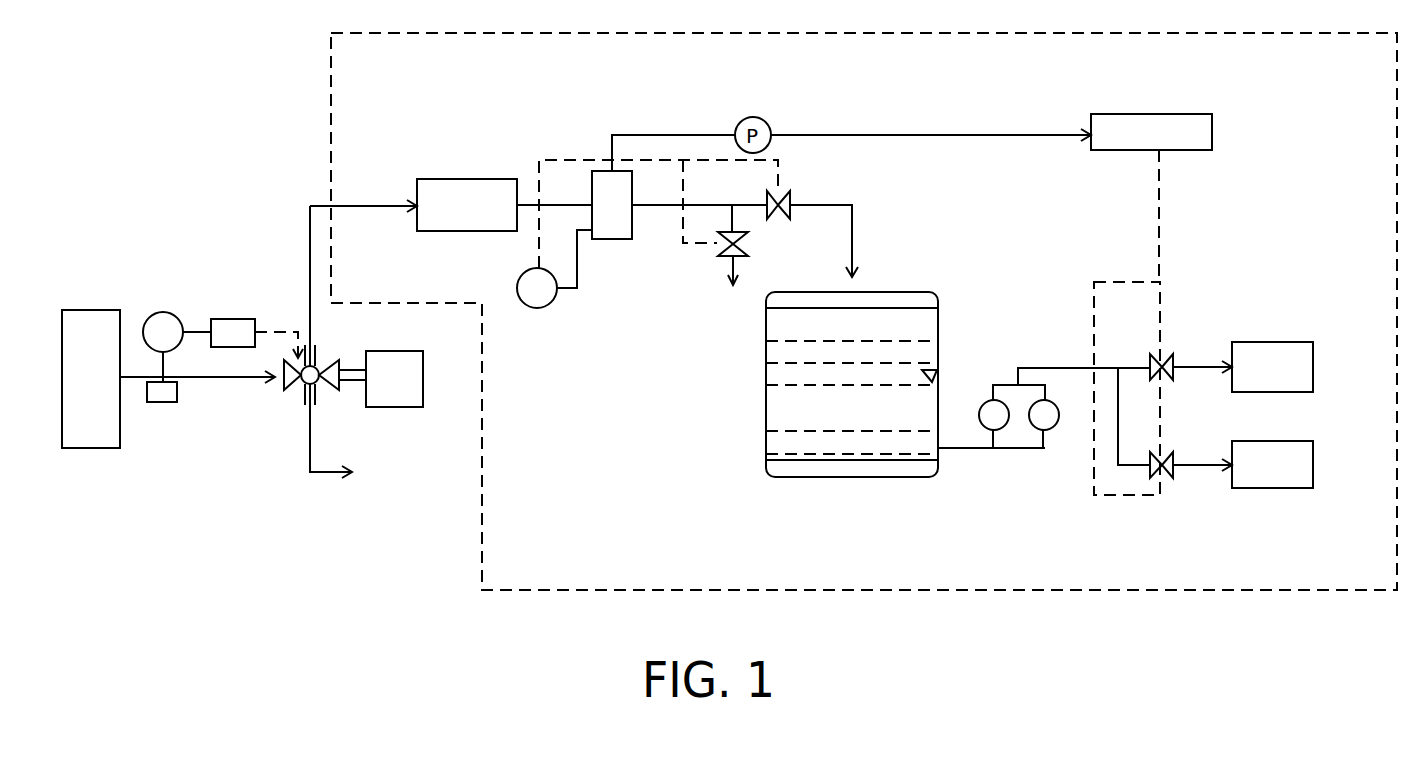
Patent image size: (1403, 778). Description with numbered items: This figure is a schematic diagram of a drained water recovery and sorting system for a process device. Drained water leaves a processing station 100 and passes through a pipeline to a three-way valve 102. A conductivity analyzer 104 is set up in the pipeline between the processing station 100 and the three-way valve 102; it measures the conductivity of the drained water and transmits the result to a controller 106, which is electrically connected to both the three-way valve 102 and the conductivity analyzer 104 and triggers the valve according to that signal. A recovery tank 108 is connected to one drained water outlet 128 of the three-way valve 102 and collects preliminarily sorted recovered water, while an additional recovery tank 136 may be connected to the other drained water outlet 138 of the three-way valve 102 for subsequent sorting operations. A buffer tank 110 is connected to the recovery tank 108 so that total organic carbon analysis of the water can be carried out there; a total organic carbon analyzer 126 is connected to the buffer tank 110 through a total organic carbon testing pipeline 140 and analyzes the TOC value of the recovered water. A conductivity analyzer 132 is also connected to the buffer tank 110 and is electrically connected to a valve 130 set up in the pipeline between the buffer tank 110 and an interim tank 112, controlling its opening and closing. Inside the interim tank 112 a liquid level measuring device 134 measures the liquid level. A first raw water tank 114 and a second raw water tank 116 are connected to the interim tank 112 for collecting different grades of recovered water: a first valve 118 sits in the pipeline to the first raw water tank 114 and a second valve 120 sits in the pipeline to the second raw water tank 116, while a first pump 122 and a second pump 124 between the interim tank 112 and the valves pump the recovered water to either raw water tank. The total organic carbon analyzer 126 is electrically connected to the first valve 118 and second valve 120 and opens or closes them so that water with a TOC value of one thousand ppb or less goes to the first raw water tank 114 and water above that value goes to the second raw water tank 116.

The processing station 100 is at (92, 310).
The three-way valve 102 is at (290, 390).
The conductivity analyzer 104 is at (160, 311).
The controller 106 is at (233, 319).
The recovery tank 108 is at (473, 231).
The buffer tank 110 is at (613, 239).
The interim tank 112 is at (853, 477).
The first raw water tank 114 is at (1313, 352).
The second raw water tank 116 is at (1313, 478).
The first valve 118 is at (1173, 357).
The second valve 120 is at (1173, 473).
The first pump 122 is at (987, 447).
The second pump 124 is at (1035, 447).
The total organic carbon analyzer 126 is at (1133, 114).
The drained water outlet 128 is at (320, 358).
The valve 130 is at (788, 198).
The conductivity analyzer 132 is at (540, 308).
The liquid level measuring device 134 is at (937, 377).
The recovery tank 136 is at (395, 407).
The drained water outlet 138 is at (350, 383).
The total organic carbon testing pipeline 140 is at (1010, 135).